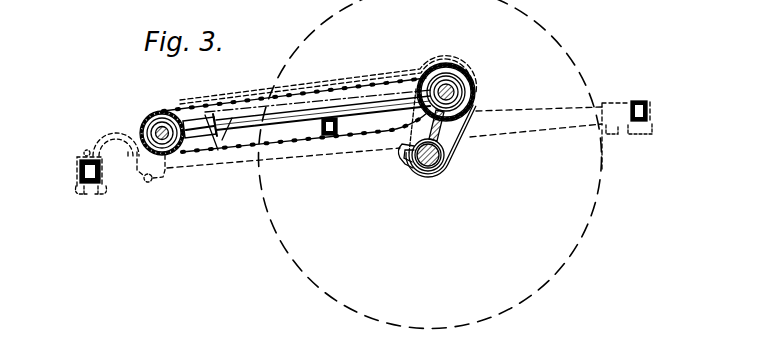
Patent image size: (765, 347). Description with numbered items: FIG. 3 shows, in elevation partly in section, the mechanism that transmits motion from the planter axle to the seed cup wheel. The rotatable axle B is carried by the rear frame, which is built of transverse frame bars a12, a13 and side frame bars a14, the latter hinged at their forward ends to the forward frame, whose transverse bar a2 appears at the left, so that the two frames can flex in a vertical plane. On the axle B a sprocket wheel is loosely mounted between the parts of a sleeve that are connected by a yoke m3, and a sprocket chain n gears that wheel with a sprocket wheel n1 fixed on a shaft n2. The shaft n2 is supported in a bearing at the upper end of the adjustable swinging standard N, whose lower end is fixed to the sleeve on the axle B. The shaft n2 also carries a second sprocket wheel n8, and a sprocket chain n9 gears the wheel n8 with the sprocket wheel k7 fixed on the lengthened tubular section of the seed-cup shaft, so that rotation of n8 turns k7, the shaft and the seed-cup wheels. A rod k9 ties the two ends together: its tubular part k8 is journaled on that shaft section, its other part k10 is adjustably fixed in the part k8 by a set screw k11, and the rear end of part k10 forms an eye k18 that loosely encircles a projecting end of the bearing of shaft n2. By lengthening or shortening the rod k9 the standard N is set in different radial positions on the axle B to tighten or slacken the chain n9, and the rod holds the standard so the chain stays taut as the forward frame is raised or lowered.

The transverse bar a2 is at (77, 173).
The sprocket wheel k7 is at (150, 118).
The tubular part k8 is at (210, 116).
The set screw k11 is at (208, 114).
The rod part k10 is at (264, 112).
The sprocket chain n9 is at (355, 94).
The rod k9 is at (217, 148).
The transverse frame bar a12 is at (329, 138).
The eye k18 is at (453, 55).
The sprocket wheel n8 is at (462, 78).
The shaft n2 is at (468, 92).
The sprocket wheel n1 is at (468, 106).
The sprocket chain n is at (462, 143).
The axle B is at (415, 166).
The swinging standard N is at (476, 121).
The yoke m3 is at (410, 158).
The side frame bar a14 is at (556, 128).
The transverse frame bar a13 is at (638, 101).